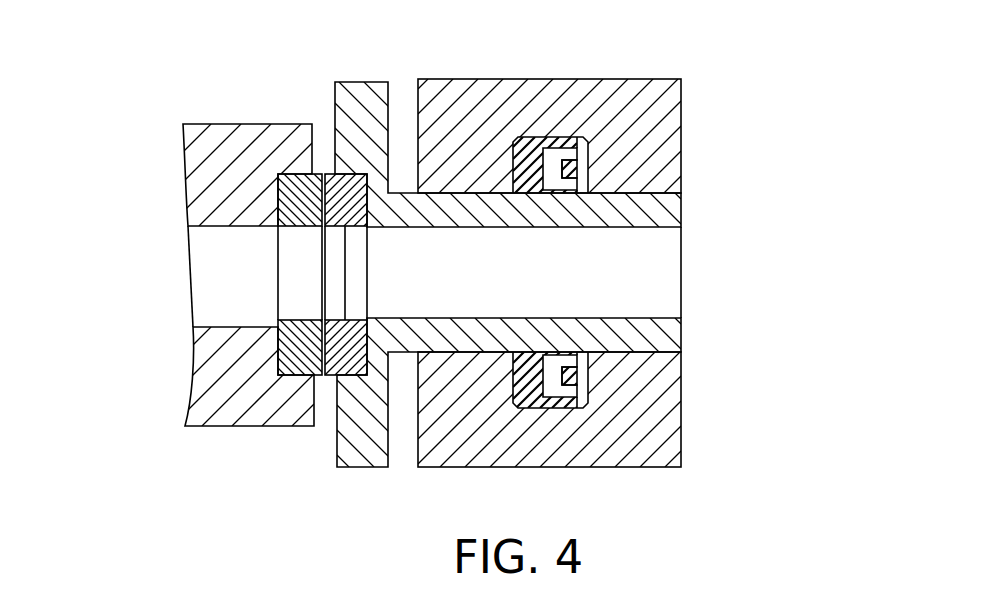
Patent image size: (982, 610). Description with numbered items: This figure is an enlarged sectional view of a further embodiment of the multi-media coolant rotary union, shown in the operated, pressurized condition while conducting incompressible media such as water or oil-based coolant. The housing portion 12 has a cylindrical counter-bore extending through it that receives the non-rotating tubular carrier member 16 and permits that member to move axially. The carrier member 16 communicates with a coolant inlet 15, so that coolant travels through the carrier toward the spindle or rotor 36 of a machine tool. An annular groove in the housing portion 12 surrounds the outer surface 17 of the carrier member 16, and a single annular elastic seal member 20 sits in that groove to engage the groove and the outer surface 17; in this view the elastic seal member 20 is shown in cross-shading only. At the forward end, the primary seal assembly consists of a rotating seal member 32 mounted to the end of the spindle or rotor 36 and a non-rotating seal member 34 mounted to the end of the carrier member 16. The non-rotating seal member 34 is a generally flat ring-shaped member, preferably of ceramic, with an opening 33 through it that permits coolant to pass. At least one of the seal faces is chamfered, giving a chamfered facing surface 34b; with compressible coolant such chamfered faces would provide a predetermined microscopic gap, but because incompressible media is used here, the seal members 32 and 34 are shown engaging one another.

The housing portion 12 is at (553, 102).
The coolant inlet 15 is at (682, 272).
The tubular carrier member 16 is at (658, 203).
The outer surface 17 is at (682, 343).
The elastic seal member 20 is at (577, 175).
The rotating seal member 32 is at (298, 193).
The opening 33 is at (297, 296).
The non-rotating seal member 34 is at (343, 193).
The chamfered facing surface 34b is at (323, 226).
The spindle or rotor 36 is at (220, 170).